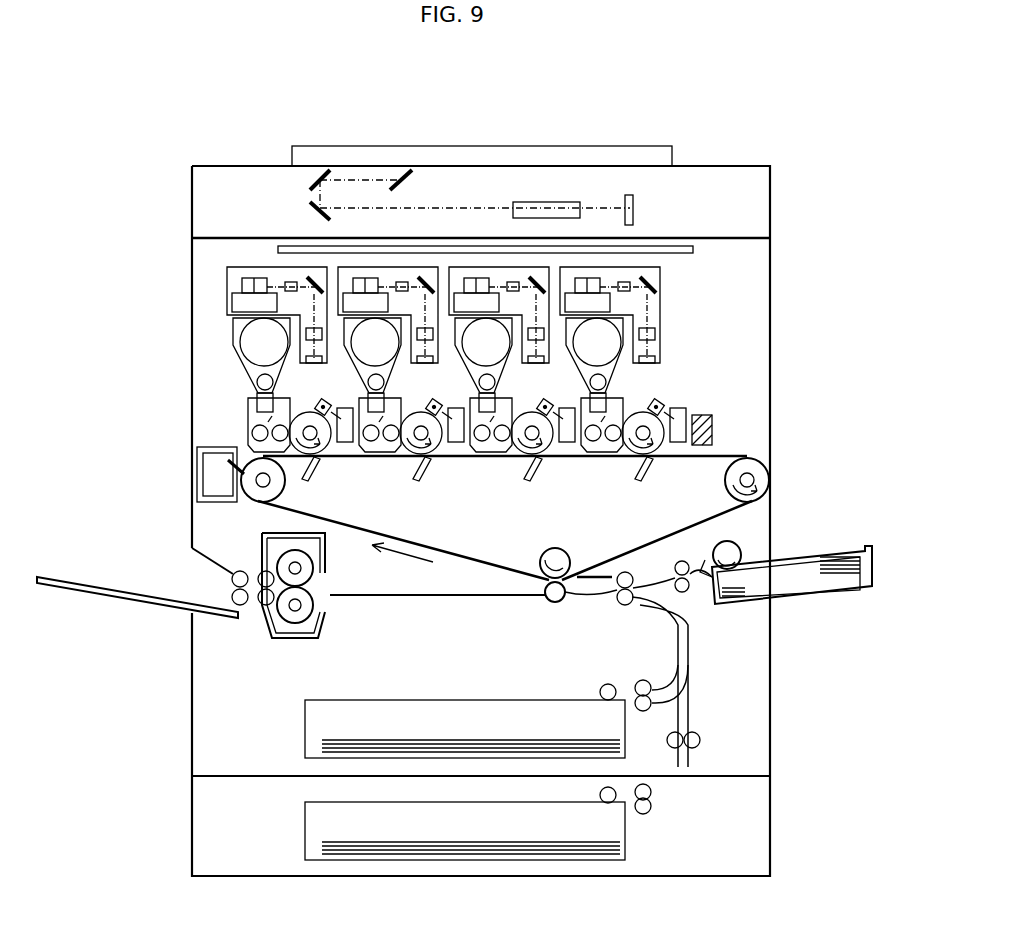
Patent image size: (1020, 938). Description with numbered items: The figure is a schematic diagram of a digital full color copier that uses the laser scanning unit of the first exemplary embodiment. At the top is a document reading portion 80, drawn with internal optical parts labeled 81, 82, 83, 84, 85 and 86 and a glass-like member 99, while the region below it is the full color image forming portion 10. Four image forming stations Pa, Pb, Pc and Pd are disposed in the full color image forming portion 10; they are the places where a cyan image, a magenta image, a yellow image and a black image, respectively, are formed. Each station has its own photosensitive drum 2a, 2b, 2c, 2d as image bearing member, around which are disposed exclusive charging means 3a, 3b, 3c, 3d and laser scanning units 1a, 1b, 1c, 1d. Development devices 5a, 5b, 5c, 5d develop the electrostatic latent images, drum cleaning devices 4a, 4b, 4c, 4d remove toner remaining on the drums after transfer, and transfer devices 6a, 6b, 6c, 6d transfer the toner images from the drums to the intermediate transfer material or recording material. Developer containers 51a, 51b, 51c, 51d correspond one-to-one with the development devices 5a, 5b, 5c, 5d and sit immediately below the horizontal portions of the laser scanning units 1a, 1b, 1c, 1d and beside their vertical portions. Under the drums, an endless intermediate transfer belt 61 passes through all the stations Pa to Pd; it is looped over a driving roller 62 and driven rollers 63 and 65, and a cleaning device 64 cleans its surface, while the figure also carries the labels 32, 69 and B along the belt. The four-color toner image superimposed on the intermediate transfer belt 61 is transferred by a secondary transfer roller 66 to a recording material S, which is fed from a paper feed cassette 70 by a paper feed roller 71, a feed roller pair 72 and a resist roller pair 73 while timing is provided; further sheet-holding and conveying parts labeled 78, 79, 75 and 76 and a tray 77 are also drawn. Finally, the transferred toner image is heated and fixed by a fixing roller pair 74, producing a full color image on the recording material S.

The full color image forming portion 10 is at (768, 356).
The laser scanning unit 1a is at (228, 266).
The laser scanning unit 1b is at (415, 266).
The laser scanning unit 1c is at (496, 266).
The laser scanning unit 1d is at (662, 268).
The photosensitive drum 2a is at (336, 452).
The photosensitive drum 2b is at (447, 452).
The photosensitive drum 2c is at (558, 452).
The photosensitive drum 2d is at (665, 452).
The charging means 3a is at (312, 412).
The charging means 3b is at (423, 412).
The charging means 3c is at (534, 412).
The charging means 3d is at (656, 402).
The drum cleaning device 4a is at (328, 402).
The drum cleaning device 4b is at (439, 402).
The drum cleaning device 4c is at (550, 402).
The drum cleaning device 4d is at (668, 405).
The development device 5a is at (328, 485).
The development device 5b is at (415, 489).
The development device 5c is at (525, 497).
The development device 5d is at (641, 492).
The transfer device 6a is at (318, 470).
The transfer device 6b is at (428, 470).
The transfer device 6c is at (540, 470).
The transfer device 6d is at (647, 476).
The developer container 51a is at (243, 332).
The developer container 51b is at (348, 330).
The developer container 51c is at (458, 330).
The developer container 51d is at (620, 338).
The image forming station Pa is at (291, 428).
The image forming station Pb is at (418, 441).
The image forming station Pc is at (527, 444).
The image forming station Pd is at (656, 413).
The intermediate transfer belt 32 is at (740, 482).
The intermediate transfer belt 61 is at (505, 518).
The driving roller 62 is at (770, 480).
The driven roller 63 is at (244, 467).
The cleaning device 64 is at (210, 500).
The driven roller 65 is at (568, 556).
The secondary transfer roller 66 is at (555, 603).
The sensor 69 is at (713, 428).
The paper feed cassette 70 is at (786, 584).
The paper feed roller 71 is at (742, 553).
The feed roller pair 72 is at (690, 592).
The resist roller pair 73 is at (622, 606).
The fixing roller pair 74 is at (325, 600).
The discharge rollers 75 is at (262, 606).
The discharge rollers 76 is at (232, 578).
The discharge tray 77 is at (105, 590).
The sheet cassette 78 is at (770, 722).
The sheet cassette 79 is at (770, 832).
The document reading portion 80 is at (544, 162).
The laser light source 81 is at (633, 205).
The collimator lens 82 is at (570, 202).
The mirror 83 is at (312, 203).
The mirror 84 is at (322, 168).
The mirror 85 is at (404, 172).
The scanner housing 86 is at (532, 152).
The dust-proof glass 99 is at (695, 249).
The recording material S is at (825, 556).
The conveying direction B is at (402, 562).